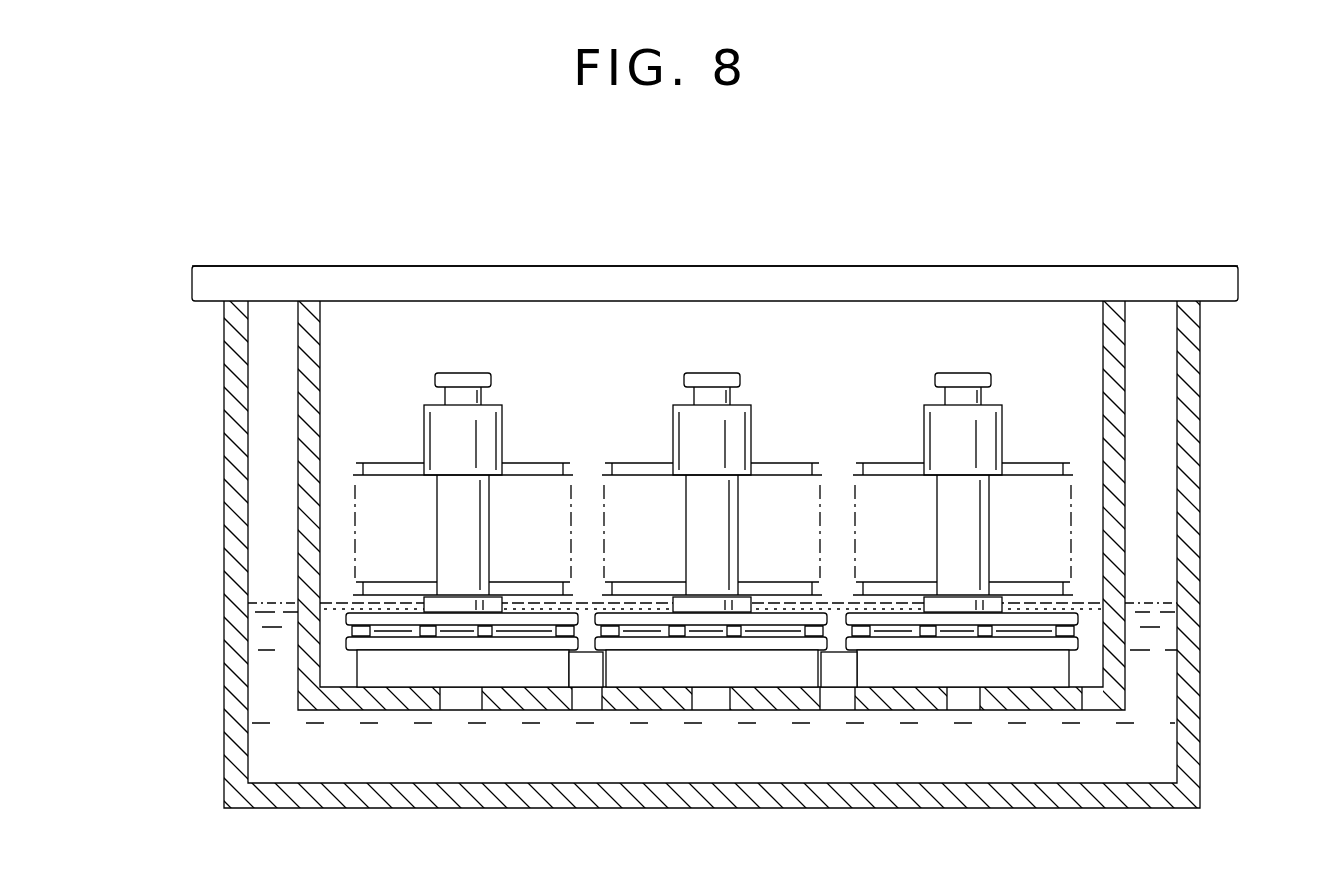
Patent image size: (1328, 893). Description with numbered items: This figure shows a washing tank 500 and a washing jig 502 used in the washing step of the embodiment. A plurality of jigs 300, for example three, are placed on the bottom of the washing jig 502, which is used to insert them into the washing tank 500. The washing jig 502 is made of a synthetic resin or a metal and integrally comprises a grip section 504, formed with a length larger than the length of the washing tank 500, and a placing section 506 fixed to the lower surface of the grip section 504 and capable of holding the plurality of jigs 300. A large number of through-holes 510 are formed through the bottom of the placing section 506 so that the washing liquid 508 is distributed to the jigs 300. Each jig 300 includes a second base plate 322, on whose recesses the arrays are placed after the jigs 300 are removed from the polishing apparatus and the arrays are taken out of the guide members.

The jig 300 is at (497, 372).
The second base plate 322 is at (343, 617).
The washing tank 500 is at (225, 520).
The washing jig 502 is at (1025, 267).
The grip section 504 is at (391, 282).
The placing section 506 is at (360, 697).
The washing liquid 508 is at (1162, 703).
The through-holes 510 is at (447, 698).